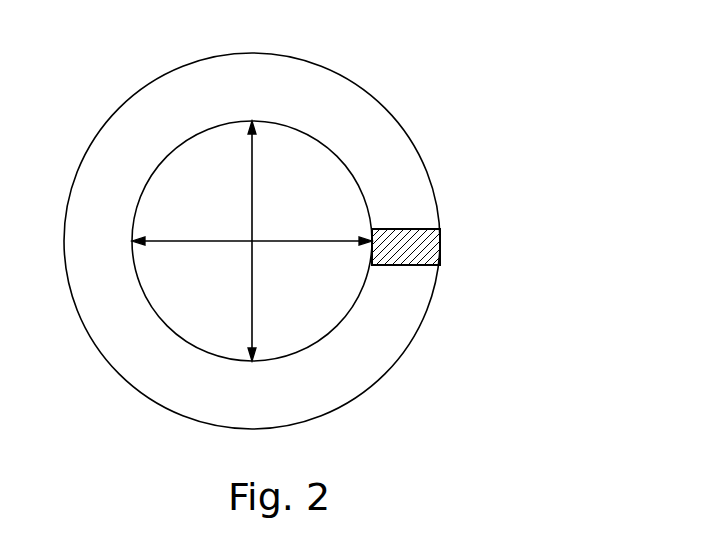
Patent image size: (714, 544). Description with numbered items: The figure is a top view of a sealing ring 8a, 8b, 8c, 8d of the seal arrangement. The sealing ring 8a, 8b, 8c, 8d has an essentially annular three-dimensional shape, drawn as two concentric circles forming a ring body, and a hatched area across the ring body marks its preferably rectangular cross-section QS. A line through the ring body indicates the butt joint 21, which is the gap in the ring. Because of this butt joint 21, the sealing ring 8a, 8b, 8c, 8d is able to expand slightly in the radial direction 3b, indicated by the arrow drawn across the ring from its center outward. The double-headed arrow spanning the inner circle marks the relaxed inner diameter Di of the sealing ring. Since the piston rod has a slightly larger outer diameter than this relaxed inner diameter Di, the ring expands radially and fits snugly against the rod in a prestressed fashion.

The butt joint 21 is at (317, 138).
The radial direction 3b is at (250, 232).
The relaxed inner diameter Di is at (163, 245).
The sealing ring 8a is at (448, 229).
The sealing ring 8b is at (406, 247).
The sealing ring 8c is at (406, 247).
The sealing ring 8d is at (406, 247).
The cross-section QS is at (415, 250).